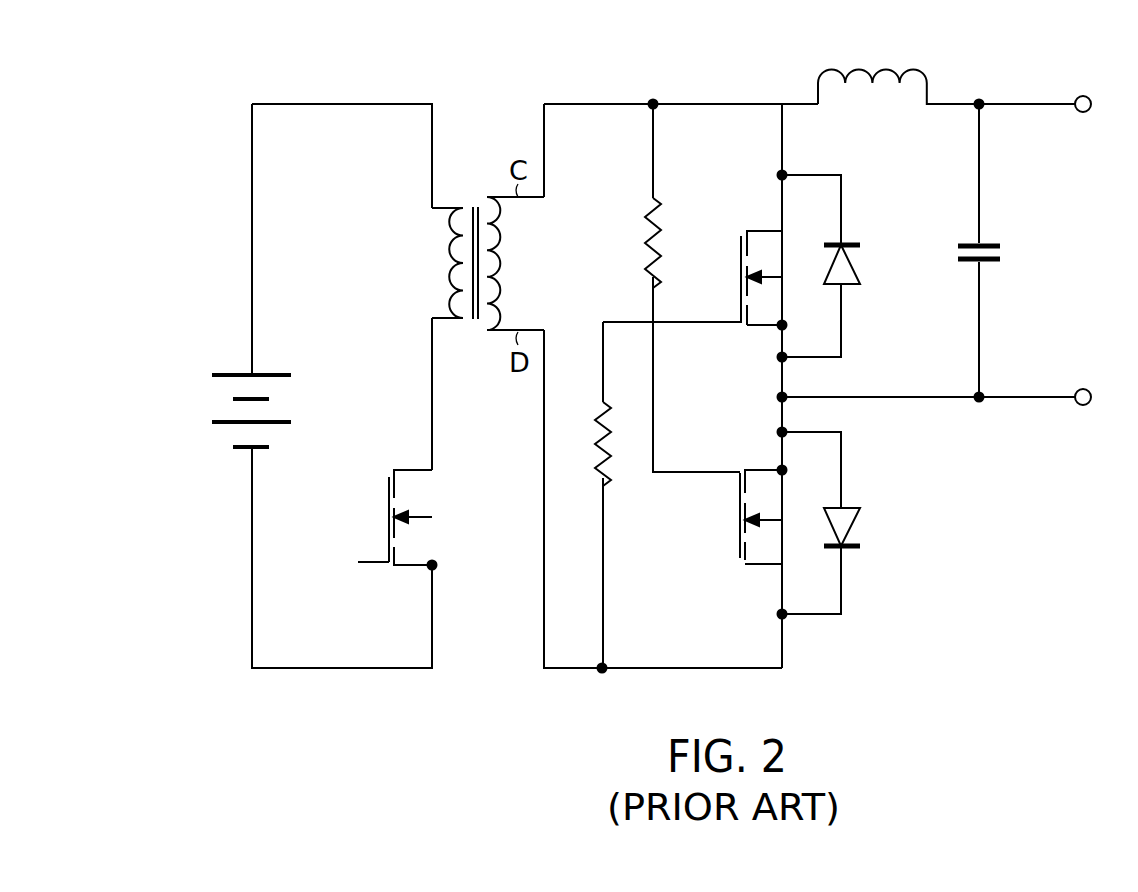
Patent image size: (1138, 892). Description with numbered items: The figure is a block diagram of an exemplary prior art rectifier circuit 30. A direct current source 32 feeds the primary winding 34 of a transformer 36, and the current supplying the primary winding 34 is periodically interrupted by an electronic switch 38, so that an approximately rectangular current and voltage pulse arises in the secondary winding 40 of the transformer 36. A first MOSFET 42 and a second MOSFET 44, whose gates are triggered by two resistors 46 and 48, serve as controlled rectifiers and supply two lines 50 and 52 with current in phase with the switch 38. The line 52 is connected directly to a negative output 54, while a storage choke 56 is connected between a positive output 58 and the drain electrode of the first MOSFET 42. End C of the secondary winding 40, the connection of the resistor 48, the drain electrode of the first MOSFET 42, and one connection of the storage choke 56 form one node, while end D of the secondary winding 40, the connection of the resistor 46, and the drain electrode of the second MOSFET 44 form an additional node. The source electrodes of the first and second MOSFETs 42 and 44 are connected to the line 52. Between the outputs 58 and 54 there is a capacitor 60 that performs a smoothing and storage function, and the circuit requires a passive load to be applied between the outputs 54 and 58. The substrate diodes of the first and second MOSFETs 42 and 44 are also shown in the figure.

The rectifier circuit 30 is at (742, 29).
The direct current source 32 is at (218, 421).
The primary winding 34 is at (462, 264).
The transformer 36 is at (476, 323).
The electronic switch 38 is at (386, 503).
The secondary winding 40 is at (501, 250).
The first MOSFET 42 is at (738, 266).
The second MOSFET 44 is at (738, 528).
The resistor 46 is at (600, 449).
The resistor 48 is at (648, 247).
The line 50 is at (690, 104).
The line 52 is at (1020, 400).
The negative output 54 is at (1090, 391).
The storage choke 56 is at (887, 69).
The positive output 58 is at (1090, 98).
The capacitor 60 is at (991, 244).